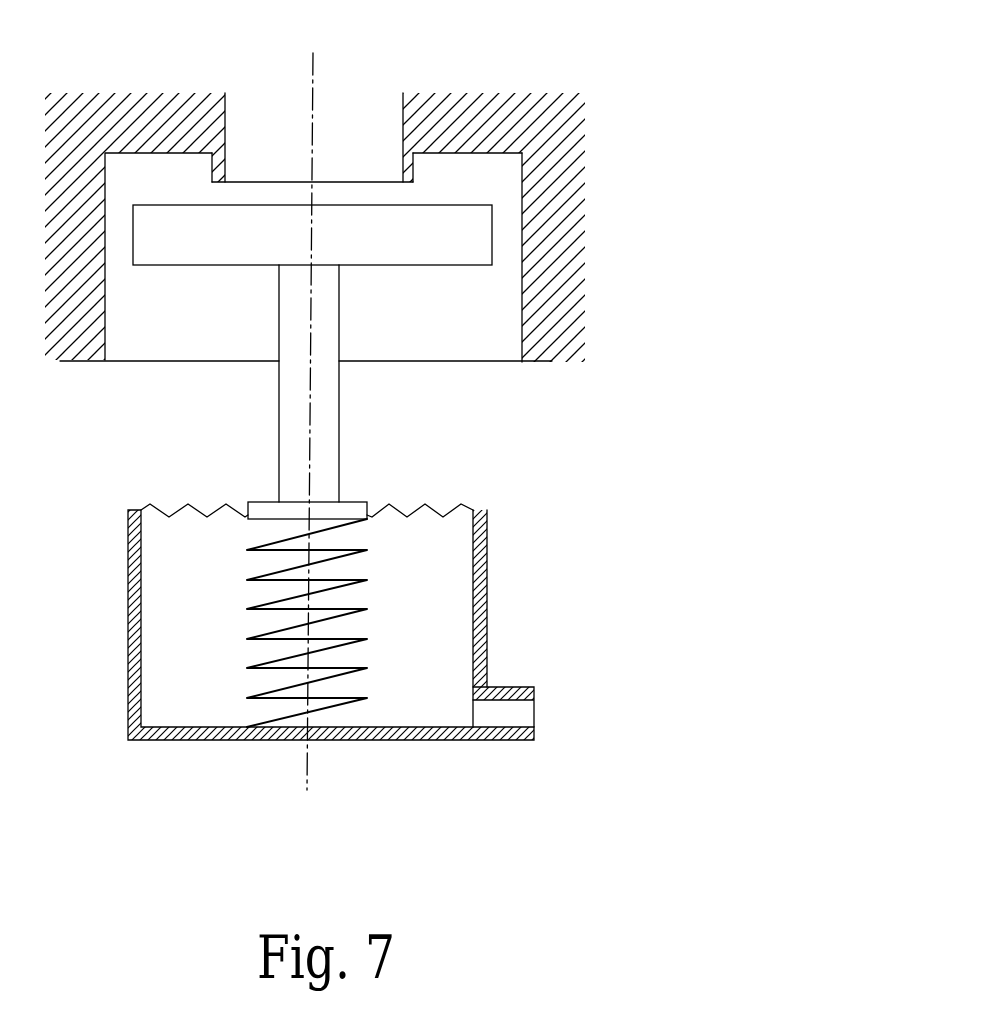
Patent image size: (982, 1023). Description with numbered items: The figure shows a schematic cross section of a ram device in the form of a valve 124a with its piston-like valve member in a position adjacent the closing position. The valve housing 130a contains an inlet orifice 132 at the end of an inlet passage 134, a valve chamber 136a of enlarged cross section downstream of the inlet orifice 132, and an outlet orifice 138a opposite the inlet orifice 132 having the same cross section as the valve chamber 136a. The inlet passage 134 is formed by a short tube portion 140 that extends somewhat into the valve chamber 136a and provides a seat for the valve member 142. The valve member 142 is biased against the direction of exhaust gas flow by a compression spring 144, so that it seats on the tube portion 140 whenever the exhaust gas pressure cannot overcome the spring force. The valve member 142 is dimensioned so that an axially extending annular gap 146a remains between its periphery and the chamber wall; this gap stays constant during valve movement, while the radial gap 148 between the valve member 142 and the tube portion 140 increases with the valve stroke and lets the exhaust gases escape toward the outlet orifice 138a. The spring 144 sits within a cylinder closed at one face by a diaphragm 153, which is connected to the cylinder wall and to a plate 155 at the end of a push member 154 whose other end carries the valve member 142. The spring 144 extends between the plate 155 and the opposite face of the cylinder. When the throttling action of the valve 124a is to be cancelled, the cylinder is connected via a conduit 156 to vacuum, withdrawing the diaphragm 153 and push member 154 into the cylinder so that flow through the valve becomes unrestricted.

The valve 124a is at (565, 82).
The valve housing 130a is at (567, 292).
The inlet orifice 132 is at (337, 181).
The inlet passage 134 is at (305, 135).
The valve chamber 136a is at (447, 337).
The outlet orifice 138a is at (512, 363).
The tube portion 140 is at (412, 177).
The valve member 142 is at (237, 267).
The compression spring 144 is at (343, 610).
The annular gap 146a is at (508, 232).
The radial gap 148 is at (213, 188).
The diaphragm 153 is at (432, 517).
The push member 154 is at (292, 462).
The plate 155 is at (353, 502).
The conduit 156 is at (520, 713).